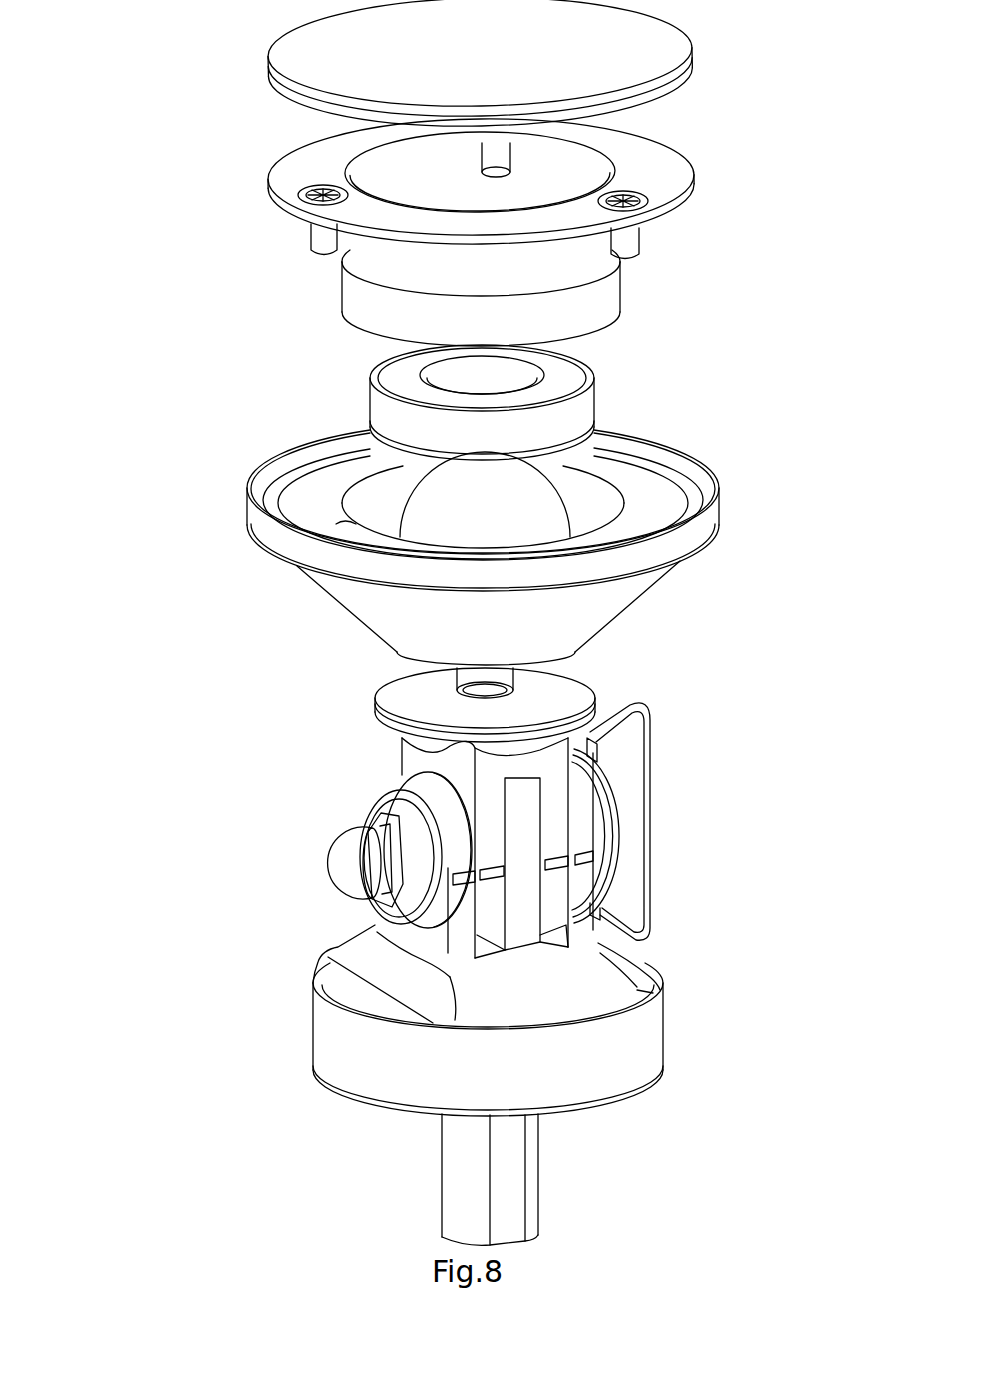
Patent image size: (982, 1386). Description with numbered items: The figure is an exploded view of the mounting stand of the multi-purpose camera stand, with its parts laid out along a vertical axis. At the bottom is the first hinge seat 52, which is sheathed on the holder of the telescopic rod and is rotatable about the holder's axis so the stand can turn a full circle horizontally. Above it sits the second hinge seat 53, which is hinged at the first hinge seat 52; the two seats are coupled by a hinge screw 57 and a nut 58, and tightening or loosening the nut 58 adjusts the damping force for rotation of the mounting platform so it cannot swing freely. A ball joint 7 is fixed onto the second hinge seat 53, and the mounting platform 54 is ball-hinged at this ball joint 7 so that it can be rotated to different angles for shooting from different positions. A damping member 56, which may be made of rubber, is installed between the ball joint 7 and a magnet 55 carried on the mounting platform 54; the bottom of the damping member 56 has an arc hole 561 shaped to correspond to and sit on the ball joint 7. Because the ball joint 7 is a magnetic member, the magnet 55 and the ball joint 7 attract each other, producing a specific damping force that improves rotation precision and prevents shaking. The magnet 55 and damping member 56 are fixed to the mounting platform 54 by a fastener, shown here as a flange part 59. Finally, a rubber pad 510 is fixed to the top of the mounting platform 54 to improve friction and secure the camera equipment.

The rubber pad 510 is at (416, 69).
The mounting flange 59 is at (669, 183).
The magnet 55 is at (530, 325).
The damping member 56 is at (348, 393).
The arc hole 561 is at (468, 379).
The mounting platform 54 is at (288, 585).
The ball joint 7 is at (534, 518).
The second hinge seat 53 is at (405, 705).
The hinge screw 57 is at (632, 770).
The nut 58 is at (321, 860).
The first hinge seat 52 is at (596, 941).